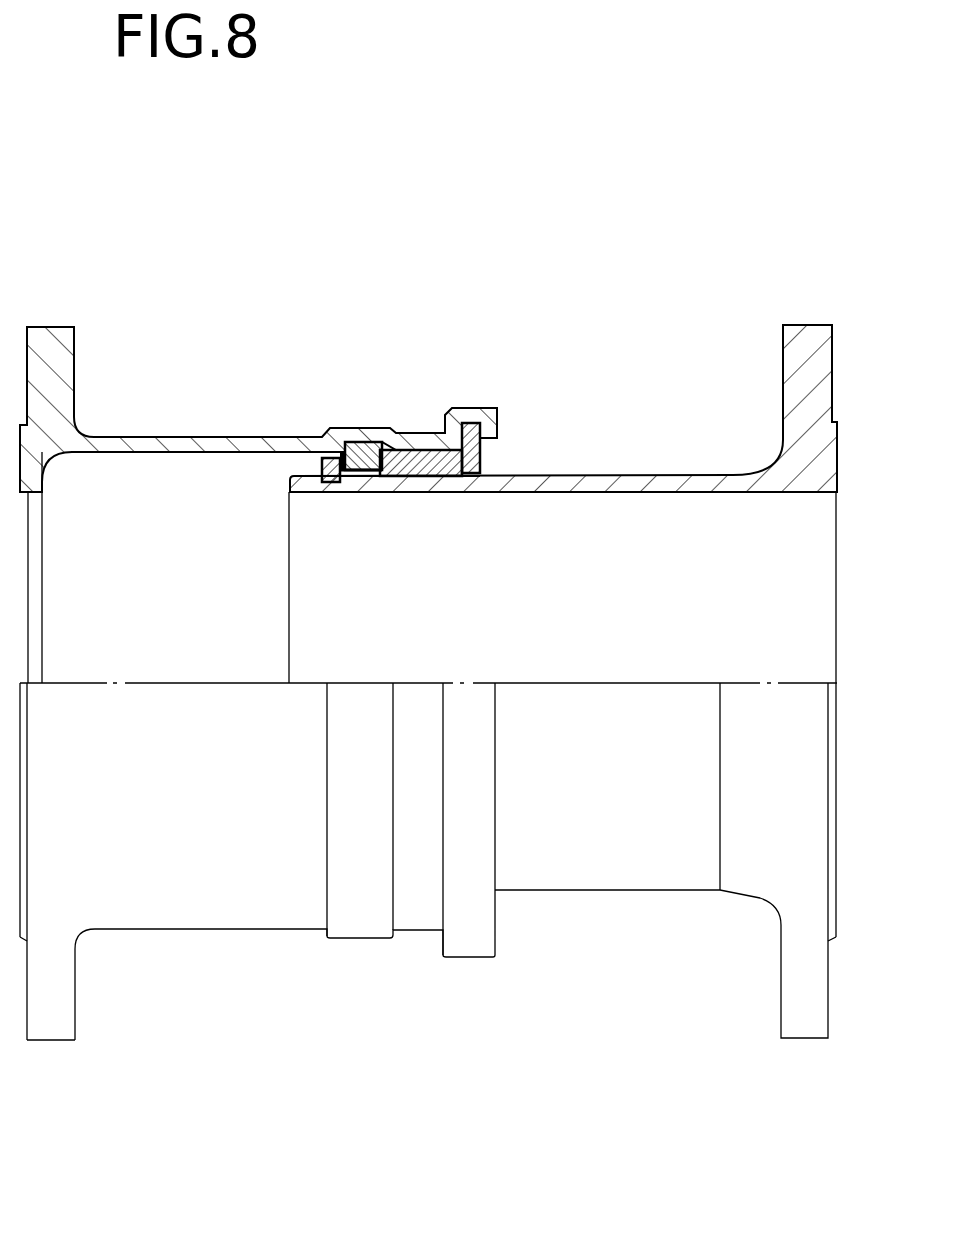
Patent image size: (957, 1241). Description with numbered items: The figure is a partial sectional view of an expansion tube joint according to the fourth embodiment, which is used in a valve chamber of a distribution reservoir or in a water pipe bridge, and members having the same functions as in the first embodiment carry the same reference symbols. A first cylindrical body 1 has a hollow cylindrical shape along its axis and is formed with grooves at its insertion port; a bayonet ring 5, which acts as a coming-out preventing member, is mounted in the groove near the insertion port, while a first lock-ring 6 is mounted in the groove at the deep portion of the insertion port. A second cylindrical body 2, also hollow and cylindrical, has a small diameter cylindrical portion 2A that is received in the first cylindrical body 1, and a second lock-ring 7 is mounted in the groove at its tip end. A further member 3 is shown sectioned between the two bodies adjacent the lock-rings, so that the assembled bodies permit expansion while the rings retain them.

The first cylindrical body 1 is at (273, 405).
The second cylindrical body 2 is at (643, 510).
The small diameter cylindrical portion 2A is at (473, 487).
The sleeve / seat member 3 is at (408, 478).
The bayonet ring 5 is at (484, 457).
The first lock-ring 6 is at (363, 430).
The second lock-ring 7 is at (325, 484).